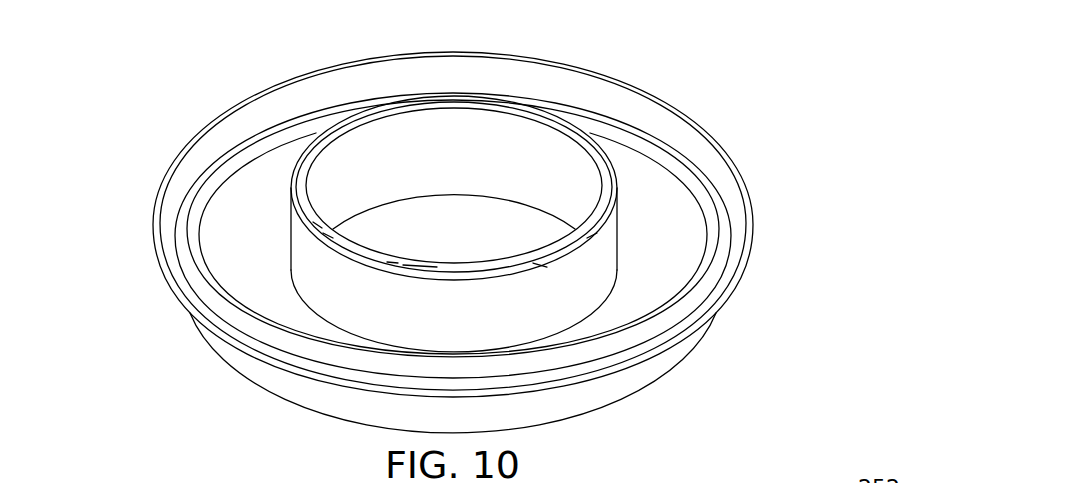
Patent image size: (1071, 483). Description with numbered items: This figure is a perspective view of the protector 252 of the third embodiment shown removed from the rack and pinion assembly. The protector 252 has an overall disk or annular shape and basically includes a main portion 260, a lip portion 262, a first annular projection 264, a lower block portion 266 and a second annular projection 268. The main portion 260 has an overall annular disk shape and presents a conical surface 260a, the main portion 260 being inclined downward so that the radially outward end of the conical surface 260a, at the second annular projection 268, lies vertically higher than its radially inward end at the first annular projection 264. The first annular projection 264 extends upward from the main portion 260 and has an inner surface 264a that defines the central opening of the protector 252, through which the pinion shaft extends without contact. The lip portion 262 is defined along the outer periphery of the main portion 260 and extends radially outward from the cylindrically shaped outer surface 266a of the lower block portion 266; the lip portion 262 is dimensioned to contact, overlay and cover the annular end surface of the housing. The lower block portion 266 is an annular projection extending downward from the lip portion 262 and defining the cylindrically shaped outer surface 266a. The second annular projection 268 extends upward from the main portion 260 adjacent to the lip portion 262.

The protector 252 is at (456, 232).
The main portion 260 is at (167, 238).
The conical surface 260a is at (248, 203).
The lip portion 262 is at (752, 203).
The first annular projection 264 is at (548, 116).
The inner surface 264a is at (387, 170).
The lower block portion 266 is at (472, 373).
The cylindrically shaped outer surface 266a is at (612, 392).
The second annular projection 268 is at (632, 93).